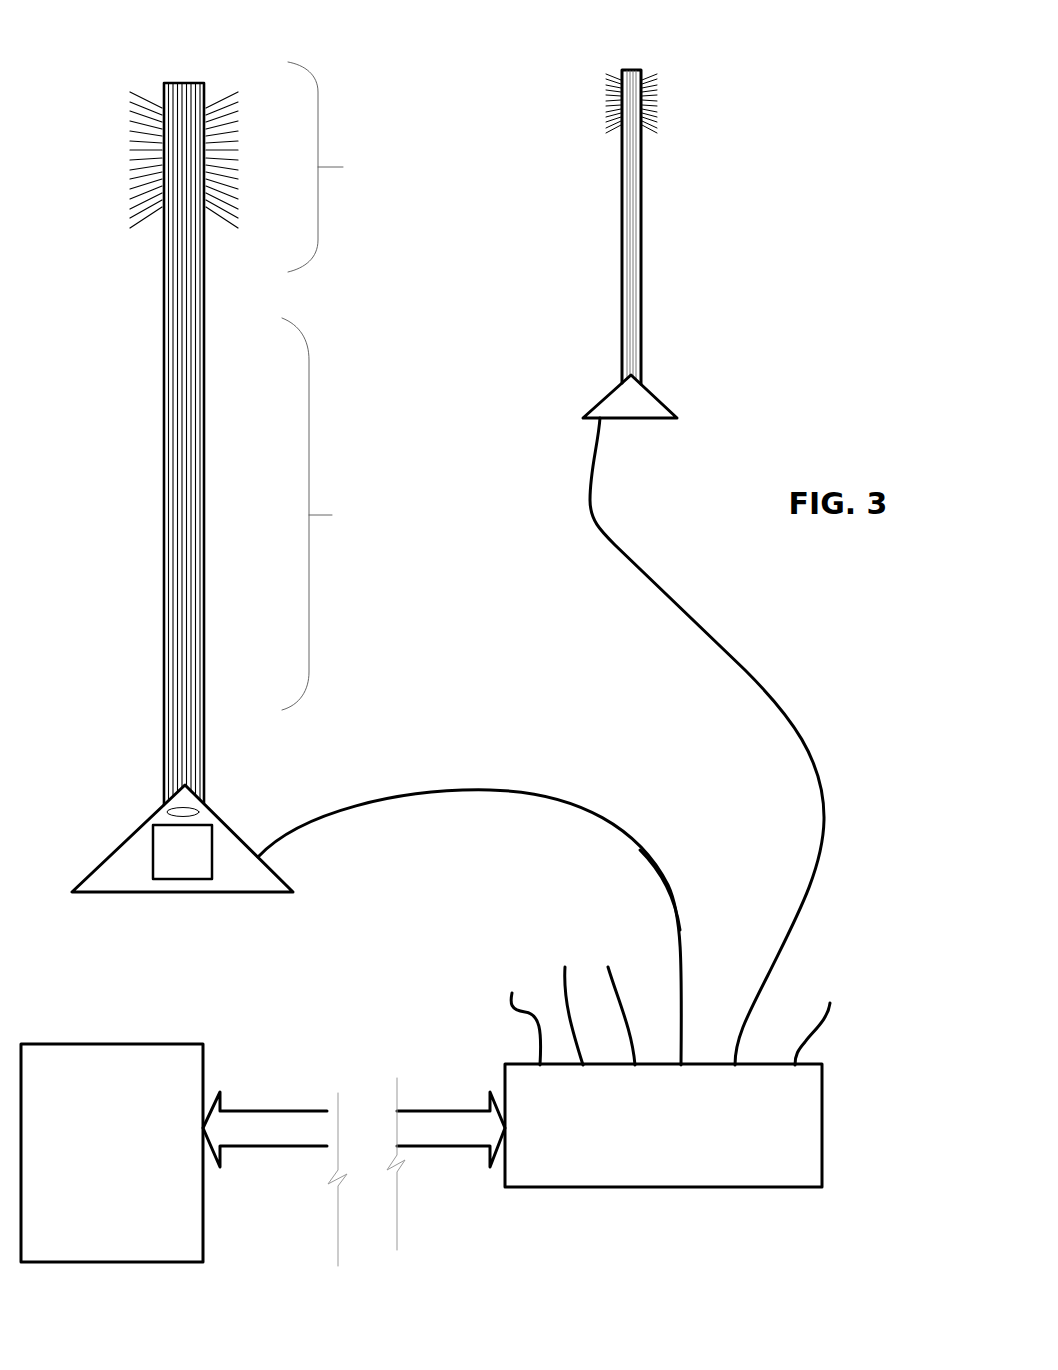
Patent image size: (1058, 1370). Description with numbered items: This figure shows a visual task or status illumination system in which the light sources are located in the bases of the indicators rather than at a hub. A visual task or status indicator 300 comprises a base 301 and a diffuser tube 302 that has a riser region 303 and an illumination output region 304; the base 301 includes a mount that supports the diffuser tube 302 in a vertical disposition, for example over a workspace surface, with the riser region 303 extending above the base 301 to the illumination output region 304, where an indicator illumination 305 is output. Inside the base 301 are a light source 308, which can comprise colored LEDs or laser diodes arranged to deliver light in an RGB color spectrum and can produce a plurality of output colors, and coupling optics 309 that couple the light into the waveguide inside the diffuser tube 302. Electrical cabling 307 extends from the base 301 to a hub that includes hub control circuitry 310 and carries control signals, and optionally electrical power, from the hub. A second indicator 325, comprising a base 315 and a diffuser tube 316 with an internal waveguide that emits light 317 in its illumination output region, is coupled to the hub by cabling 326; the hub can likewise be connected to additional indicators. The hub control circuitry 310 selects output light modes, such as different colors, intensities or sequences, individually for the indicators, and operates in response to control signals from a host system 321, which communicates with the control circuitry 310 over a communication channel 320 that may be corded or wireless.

The visual task or status indicator 300 is at (124, 430).
The base 301 is at (228, 823).
The diffuser tube 302 is at (172, 518).
The riser region 303 is at (332, 516).
The illumination output region 304 is at (343, 166).
The indicator illumination 305 is at (140, 122).
The electrical cabling 307 is at (663, 873).
The light source 308 is at (167, 833).
The coupling optics 309 is at (167, 803).
The hub control circuitry 310 is at (787, 1168).
The base 315 is at (652, 400).
The diffuser tube 316 is at (643, 250).
The emitted light 317 is at (643, 122).
The communication channel 320 is at (285, 1135).
The host system 321 is at (203, 1080).
The indicator 325 is at (574, 294).
The cabling 326 is at (765, 680).